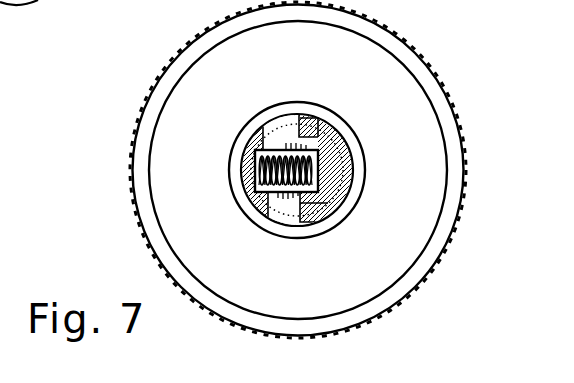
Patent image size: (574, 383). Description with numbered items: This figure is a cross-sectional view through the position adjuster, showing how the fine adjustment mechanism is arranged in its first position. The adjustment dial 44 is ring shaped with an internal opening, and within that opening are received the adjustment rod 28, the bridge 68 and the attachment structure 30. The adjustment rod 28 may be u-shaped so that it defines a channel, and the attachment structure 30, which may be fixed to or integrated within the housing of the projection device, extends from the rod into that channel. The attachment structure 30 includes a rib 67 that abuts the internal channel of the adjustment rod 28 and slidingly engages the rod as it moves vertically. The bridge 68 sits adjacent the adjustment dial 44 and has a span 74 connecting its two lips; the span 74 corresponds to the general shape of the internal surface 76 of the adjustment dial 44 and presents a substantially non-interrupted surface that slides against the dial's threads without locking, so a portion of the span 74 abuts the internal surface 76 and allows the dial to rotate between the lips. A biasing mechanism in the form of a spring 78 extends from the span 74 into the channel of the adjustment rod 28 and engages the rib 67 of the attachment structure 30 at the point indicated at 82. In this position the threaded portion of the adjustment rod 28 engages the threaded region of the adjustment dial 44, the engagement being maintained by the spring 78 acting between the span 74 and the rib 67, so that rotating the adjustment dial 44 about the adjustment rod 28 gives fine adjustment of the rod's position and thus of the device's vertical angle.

The adjustment dial 44 is at (460, 126).
The bridge 68 is at (243, 207).
The internal surface 76 is at (262, 123).
The span 74 is at (243, 160).
The adjustment rod 28 is at (366, 168).
The engagement point 82 is at (322, 124).
The spring 78 is at (268, 158).
The rib 67 is at (328, 183).
The attachment structure 30 is at (284, 204).